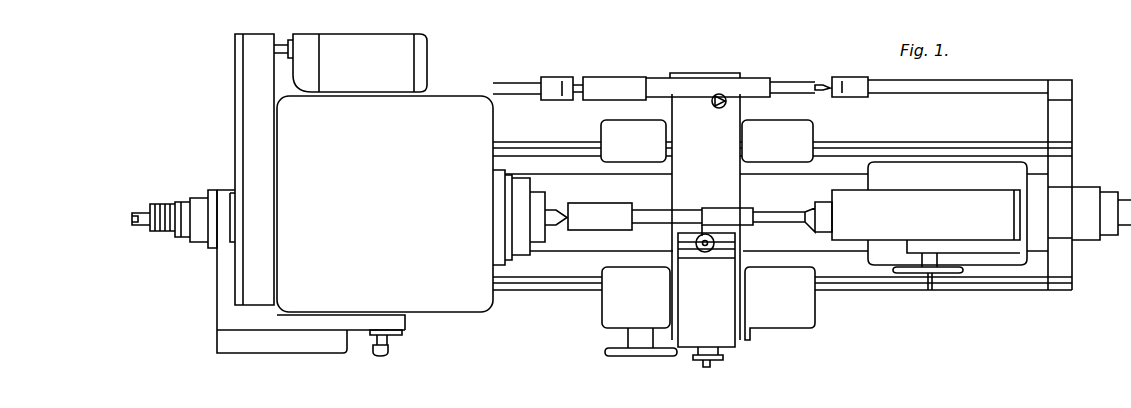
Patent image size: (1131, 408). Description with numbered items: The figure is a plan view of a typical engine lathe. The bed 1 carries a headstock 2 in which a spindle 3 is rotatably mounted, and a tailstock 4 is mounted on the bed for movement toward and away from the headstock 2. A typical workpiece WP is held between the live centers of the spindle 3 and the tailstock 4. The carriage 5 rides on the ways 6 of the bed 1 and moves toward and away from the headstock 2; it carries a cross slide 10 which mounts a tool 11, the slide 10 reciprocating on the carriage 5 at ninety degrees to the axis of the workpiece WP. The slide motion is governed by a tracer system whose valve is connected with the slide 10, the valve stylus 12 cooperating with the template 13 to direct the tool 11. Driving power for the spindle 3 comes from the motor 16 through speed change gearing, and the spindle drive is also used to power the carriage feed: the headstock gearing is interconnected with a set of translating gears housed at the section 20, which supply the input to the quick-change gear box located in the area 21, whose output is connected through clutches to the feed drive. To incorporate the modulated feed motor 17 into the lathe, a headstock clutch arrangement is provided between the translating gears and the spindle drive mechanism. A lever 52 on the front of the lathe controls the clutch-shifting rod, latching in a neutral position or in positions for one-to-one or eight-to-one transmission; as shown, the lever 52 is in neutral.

The bed 1 is at (846, 274).
The headstock 2 is at (390, 248).
The spindle 3 is at (523, 248).
The tailstock 4 is at (993, 228).
The carriage 5 is at (741, 287).
The ways 6 is at (557, 150).
The cross slide 10 is at (715, 170).
The tool 11 is at (714, 243).
The valve stylus 12 is at (726, 104).
The template 13 is at (752, 80).
The motor 16 is at (374, 66).
The modulated feed motor 17 is at (181, 236).
The translating gears section 20 is at (217, 290).
The quick-change gear box area 21 is at (290, 352).
The lever 52 is at (372, 350).
The workpiece WP is at (601, 205).